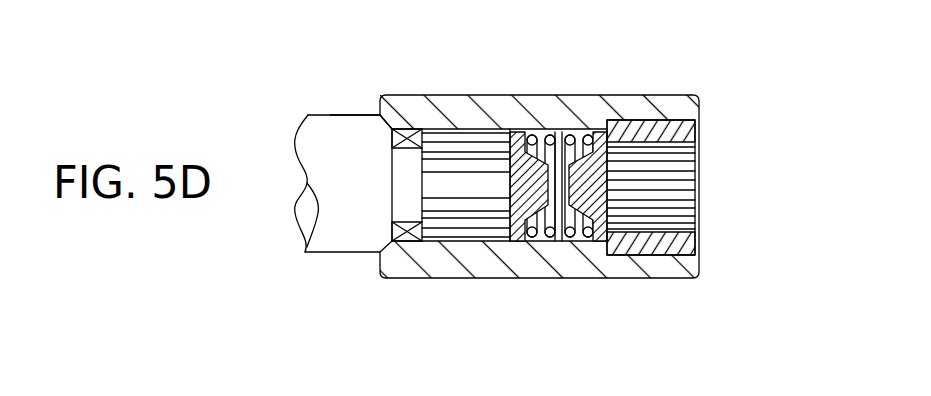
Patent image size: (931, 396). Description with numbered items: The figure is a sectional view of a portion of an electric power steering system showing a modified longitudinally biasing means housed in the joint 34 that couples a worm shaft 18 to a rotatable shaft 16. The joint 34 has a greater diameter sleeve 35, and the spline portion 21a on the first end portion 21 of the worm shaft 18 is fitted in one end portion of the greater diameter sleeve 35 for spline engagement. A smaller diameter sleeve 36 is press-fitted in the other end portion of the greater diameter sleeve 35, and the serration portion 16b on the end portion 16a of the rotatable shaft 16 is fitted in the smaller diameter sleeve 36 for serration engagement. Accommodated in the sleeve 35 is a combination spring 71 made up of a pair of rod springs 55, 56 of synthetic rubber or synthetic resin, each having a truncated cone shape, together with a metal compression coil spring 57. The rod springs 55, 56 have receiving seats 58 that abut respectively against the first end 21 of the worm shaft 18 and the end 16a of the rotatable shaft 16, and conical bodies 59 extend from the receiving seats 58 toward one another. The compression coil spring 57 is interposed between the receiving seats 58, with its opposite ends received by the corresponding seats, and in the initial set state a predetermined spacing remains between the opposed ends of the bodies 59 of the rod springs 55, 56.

The rotatable shaft 16 is at (712, 192).
The end portion of the rotatable shaft 16a is at (682, 199).
The serration portion 16b is at (667, 229).
The worm shaft 18 is at (338, 113).
The first end portion of the worm shaft 21 is at (348, 236).
The spline portion 21a is at (440, 140).
The joint 34 is at (475, 93).
The greater diameter sleeve 35 is at (418, 262).
The smaller diameter sleeve 36 is at (696, 129).
The rod spring 55 is at (509, 190).
The rod spring 56 is at (608, 200).
The compression coil spring 57 is at (557, 242).
The receiving seat 58 is at (528, 135).
The conical body 59 is at (585, 135).
The combination spring 71 is at (557, 205).